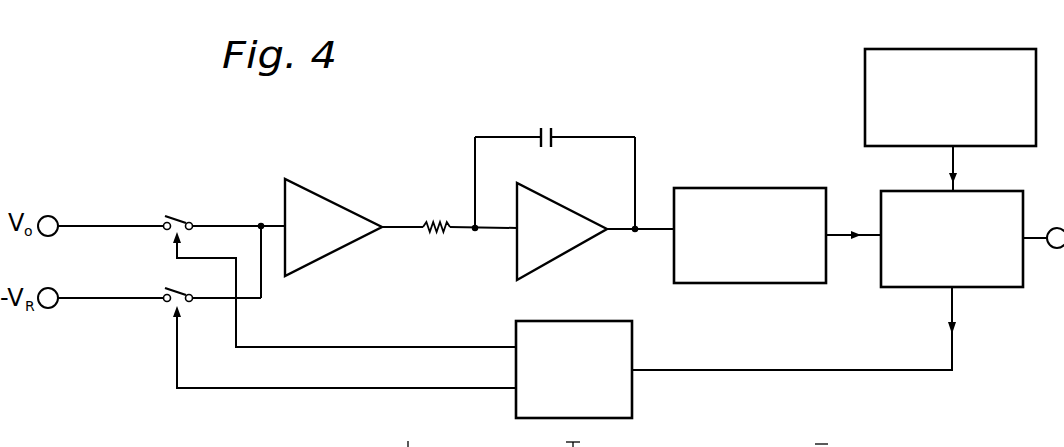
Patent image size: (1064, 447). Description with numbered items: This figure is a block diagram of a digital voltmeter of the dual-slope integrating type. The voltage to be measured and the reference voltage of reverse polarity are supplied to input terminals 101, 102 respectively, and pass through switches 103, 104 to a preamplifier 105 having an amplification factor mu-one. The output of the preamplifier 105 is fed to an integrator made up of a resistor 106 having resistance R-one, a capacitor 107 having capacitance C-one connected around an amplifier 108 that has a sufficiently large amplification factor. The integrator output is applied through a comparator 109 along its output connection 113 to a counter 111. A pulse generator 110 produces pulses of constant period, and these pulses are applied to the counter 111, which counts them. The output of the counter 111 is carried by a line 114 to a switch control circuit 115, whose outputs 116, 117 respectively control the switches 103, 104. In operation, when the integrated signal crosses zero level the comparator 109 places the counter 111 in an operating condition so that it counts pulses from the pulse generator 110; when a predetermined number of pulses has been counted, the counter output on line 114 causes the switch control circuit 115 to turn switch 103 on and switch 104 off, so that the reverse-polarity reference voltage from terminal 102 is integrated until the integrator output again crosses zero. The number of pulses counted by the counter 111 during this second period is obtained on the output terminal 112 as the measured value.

The input terminal 101 is at (50, 216).
The input terminal 102 is at (52, 308).
The switch 103 is at (180, 215).
The switch 104 is at (177, 285).
The preamplifier 105 is at (332, 198).
The resistor 106 is at (437, 240).
The capacitor 107 is at (546, 150).
The amplifier 108 is at (573, 253).
The comparator 109 is at (731, 188).
The pulse generator 110 is at (965, 48).
The counter 111 is at (1024, 216).
The terminal 112 is at (1050, 248).
The comparator output line 113 is at (838, 232).
The line 114 is at (955, 351).
The switch control circuit 115 is at (636, 406).
The output 116 is at (402, 346).
The output 117 is at (413, 390).